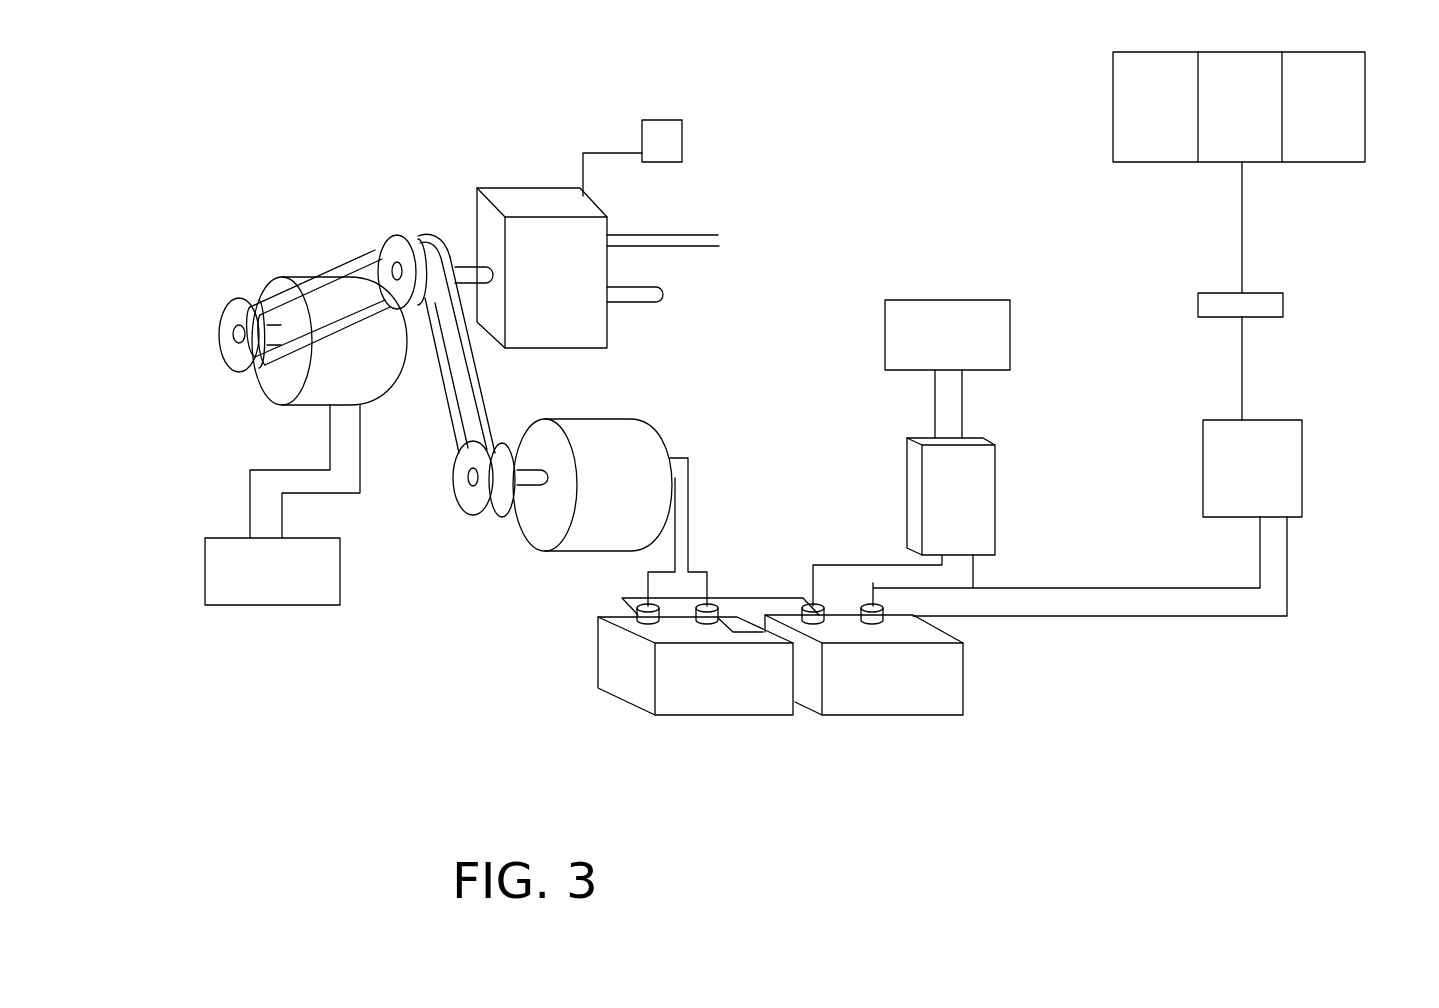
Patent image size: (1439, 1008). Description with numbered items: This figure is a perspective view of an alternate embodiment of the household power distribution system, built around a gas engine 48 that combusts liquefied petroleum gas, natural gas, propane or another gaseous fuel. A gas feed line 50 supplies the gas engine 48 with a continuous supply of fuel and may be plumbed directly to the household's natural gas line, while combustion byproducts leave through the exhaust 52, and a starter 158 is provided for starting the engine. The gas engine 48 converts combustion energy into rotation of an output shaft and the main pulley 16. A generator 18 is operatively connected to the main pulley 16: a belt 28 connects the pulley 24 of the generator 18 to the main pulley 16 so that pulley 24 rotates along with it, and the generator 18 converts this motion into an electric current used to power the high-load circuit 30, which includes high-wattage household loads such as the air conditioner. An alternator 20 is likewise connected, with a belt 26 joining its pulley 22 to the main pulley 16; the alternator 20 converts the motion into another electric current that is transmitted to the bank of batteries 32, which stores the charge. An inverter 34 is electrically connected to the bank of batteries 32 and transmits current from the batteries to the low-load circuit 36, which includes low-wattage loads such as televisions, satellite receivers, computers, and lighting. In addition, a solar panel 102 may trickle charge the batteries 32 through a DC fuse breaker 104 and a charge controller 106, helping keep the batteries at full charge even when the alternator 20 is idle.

The main pulley 16 is at (432, 242).
The generator 18 is at (287, 277).
The alternator 20 is at (553, 547).
The pulley 22 is at (487, 495).
The pulley 24 is at (233, 334).
The belt 26 is at (470, 400).
The belt 28 is at (267, 390).
The high-load circuit 30 is at (220, 597).
The bank of batteries 32 is at (873, 687).
The inverter 34 is at (977, 483).
The low-load circuit 36 is at (975, 325).
The gas engine 48 is at (528, 198).
The gas feed line 50 is at (697, 237).
The exhaust 52 is at (658, 295).
The starter 158 is at (670, 120).
The solar panel 102 is at (1327, 162).
The DC fuse breaker 104 is at (1270, 317).
The charge controller 106 is at (1288, 463).